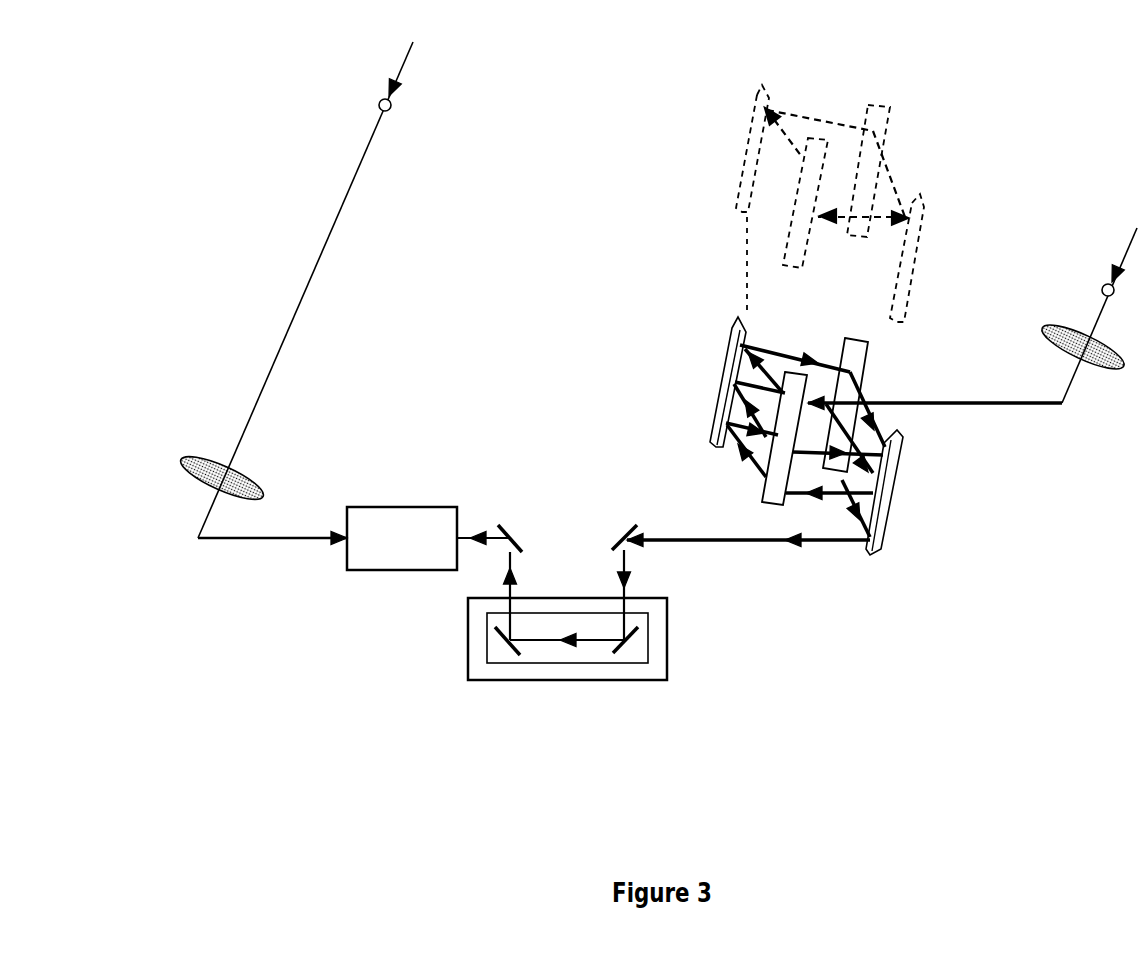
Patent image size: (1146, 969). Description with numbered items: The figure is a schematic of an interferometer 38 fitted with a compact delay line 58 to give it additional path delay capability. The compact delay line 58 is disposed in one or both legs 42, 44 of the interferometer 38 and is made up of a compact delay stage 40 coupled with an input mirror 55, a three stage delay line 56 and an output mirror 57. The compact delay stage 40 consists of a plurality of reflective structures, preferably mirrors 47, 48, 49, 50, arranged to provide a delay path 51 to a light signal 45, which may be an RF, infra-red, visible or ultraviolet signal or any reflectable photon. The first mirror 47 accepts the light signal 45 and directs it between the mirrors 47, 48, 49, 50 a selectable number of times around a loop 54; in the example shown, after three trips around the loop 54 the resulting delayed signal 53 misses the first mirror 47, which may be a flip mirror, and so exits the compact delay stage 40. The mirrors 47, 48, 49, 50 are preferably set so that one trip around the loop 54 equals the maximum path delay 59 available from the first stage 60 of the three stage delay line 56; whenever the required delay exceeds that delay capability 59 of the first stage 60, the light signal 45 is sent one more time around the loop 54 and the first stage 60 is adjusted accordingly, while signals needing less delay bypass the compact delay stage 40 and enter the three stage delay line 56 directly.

The interferometer 38 is at (192, 82).
The compact delay stage 40 is at (940, 457).
The leg of the interferometer 42 is at (733, 87).
The leg of the interferometer 44 is at (367, 400).
The light signal 45 is at (1127, 243).
The first mirror 47 is at (762, 490).
The mirror 48 is at (720, 400).
The mirror 49 is at (867, 370).
The mirror 50 is at (897, 477).
The delay path 51 is at (812, 355).
The delayed signal 53 is at (798, 555).
The loop 54 is at (820, 118).
The input mirror 55 is at (618, 525).
The three stage delay line 56 is at (668, 642).
The output mirror 57 is at (510, 522).
The compact delay line 58 is at (745, 765).
The maximum path delay 59 is at (567, 636).
The first stage 60 is at (632, 665).